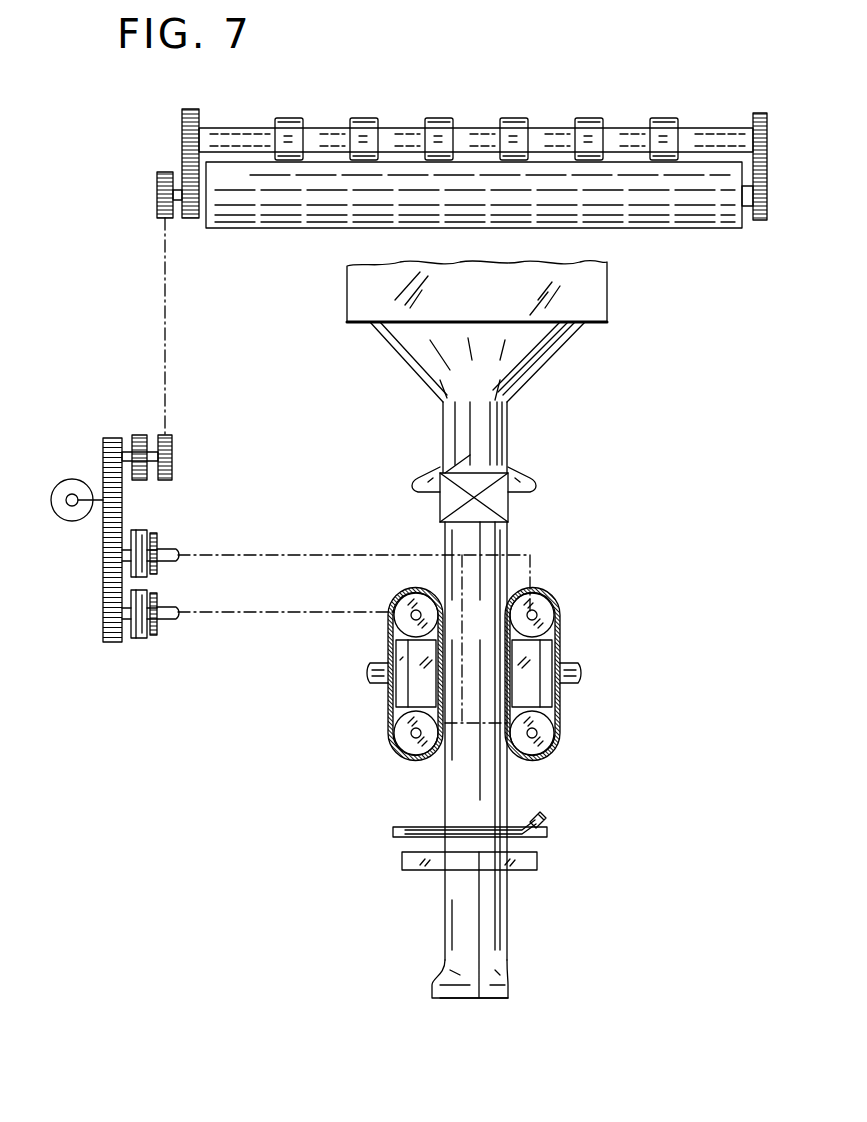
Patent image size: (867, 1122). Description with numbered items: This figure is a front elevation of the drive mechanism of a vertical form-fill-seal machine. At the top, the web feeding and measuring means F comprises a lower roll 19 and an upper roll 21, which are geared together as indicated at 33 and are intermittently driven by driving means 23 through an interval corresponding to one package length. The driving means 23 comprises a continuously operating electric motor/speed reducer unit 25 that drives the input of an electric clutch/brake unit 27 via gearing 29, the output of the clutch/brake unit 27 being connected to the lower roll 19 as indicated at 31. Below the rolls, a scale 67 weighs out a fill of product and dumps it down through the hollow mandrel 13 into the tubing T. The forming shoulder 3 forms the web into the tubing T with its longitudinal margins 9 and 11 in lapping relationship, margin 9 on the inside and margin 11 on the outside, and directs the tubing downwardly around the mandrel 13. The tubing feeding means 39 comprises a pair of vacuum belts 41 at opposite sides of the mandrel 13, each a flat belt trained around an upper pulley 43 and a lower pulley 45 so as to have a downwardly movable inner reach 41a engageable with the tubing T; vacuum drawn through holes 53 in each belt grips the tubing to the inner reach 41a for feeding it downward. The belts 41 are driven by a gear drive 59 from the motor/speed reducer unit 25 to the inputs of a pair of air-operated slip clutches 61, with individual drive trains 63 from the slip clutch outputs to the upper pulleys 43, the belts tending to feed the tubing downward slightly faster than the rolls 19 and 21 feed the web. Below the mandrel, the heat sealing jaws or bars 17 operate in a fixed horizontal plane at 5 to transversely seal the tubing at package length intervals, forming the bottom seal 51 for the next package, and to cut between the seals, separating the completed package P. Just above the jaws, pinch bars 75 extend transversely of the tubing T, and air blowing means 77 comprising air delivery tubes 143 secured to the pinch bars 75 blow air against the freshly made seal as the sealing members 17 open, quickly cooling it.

The upper roll 21 is at (296, 118).
The lower roll 19 is at (268, 228).
The gearing 33 is at (182, 126).
The connection 31 is at (157, 188).
The driving means 23 is at (153, 312).
The scale 67 is at (607, 296).
The hollow mandrel 13 is at (500, 430).
The forming shoulder 3 is at (413, 480).
The longitudinal margin 11 is at (472, 565).
The package P is at (440, 940).
The longitudinal margin 9 is at (445, 580).
The tubing T is at (393, 590).
The tubing feeding means 39 is at (481, 662).
The upper pulley 43 is at (416, 615).
The lower pulley 45 is at (400, 730).
The vacuum belt 41 is at (386, 648).
The inner reach 41a is at (436, 690).
The holes 53 is at (393, 748).
The gearing 29 is at (108, 450).
The electric motor/speed reducer unit 25 is at (72, 521).
The electric clutch/brake unit 27 is at (139, 435).
The air-operated slip clutch 61 is at (152, 547).
The gear drive 59 is at (110, 642).
The drive train 63 is at (328, 552).
The air blowing means 77 is at (422, 826).
The pinch bar 75 is at (537, 838).
The air delivery tube 143 is at (515, 830).
The heat sealing jaws 17 is at (525, 870).
The transverse sealing location 5 is at (382, 868).
The tube outlet 51 is at (498, 1000).
The web feeding and measuring means F is at (594, 106).